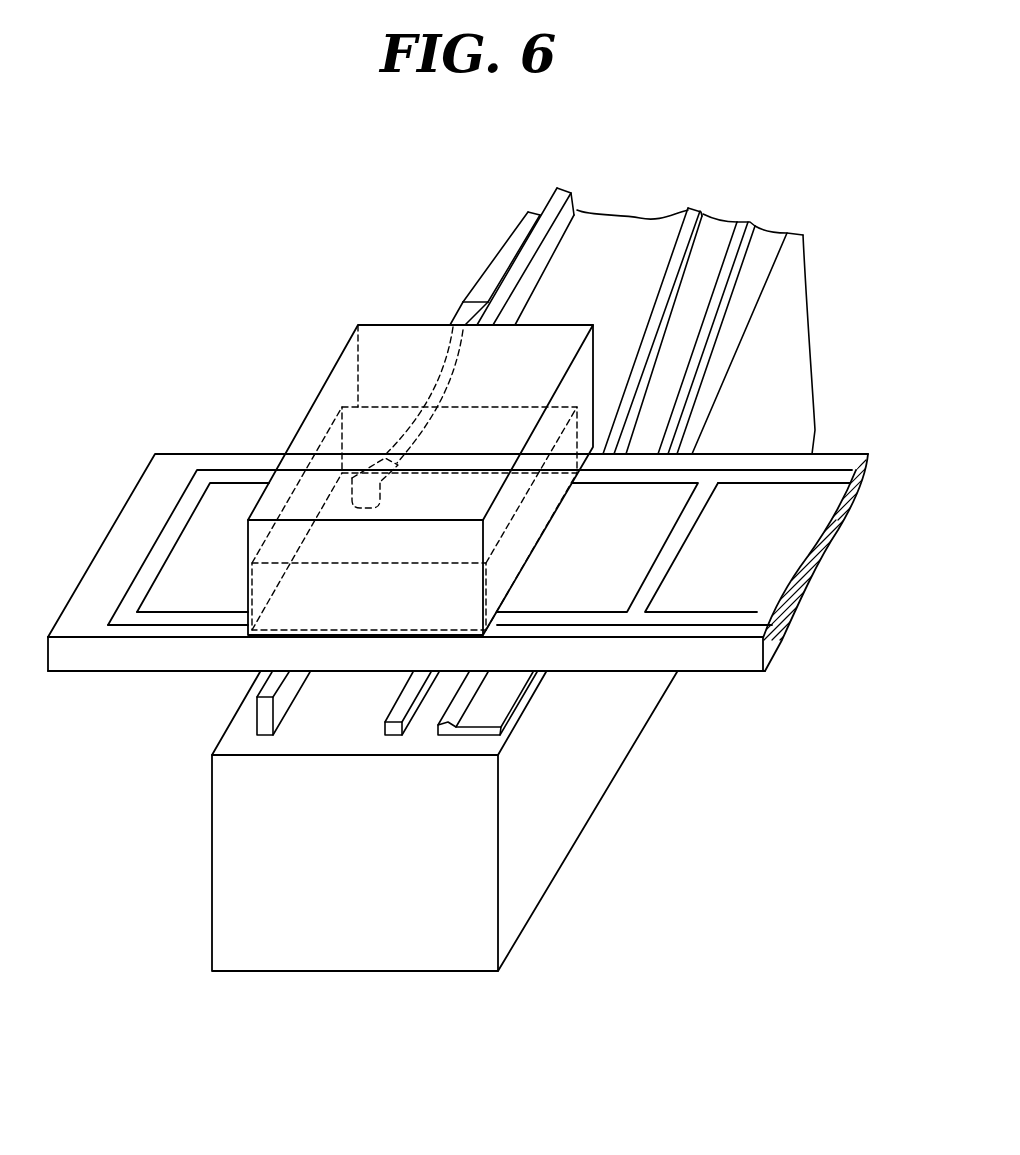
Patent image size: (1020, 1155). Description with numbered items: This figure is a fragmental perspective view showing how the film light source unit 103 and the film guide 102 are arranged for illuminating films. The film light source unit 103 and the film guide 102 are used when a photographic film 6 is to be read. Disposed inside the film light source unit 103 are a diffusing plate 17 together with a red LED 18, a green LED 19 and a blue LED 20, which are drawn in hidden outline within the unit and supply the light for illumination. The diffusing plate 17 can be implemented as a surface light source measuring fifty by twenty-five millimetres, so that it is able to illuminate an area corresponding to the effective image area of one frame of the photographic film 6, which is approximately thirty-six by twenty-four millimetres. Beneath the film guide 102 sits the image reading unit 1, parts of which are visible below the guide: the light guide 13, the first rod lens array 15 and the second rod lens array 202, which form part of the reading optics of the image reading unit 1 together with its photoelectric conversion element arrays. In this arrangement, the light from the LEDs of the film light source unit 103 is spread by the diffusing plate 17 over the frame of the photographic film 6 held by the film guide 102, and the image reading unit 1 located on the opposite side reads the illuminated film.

The image reading unit 1 is at (212, 883).
The photographic film 6 is at (780, 543).
The light guide 13 is at (490, 735).
The first rod lens array 15 is at (393, 735).
The diffusing plate 17 is at (547, 493).
The red LED 18 is at (365, 500).
The green LED 19 is at (373, 497).
The blue LED 20 is at (397, 462).
The film guide 102 is at (155, 478).
The film light source unit 103 is at (393, 325).
The second rod lens array 202 is at (268, 716).